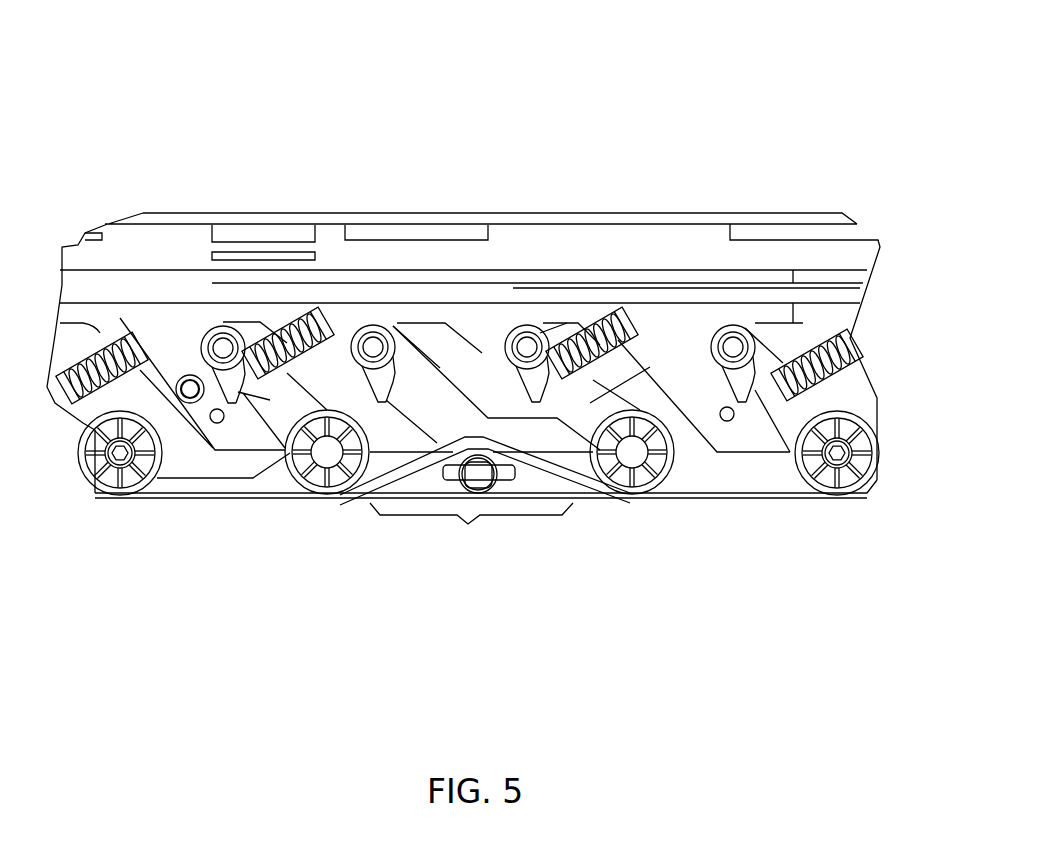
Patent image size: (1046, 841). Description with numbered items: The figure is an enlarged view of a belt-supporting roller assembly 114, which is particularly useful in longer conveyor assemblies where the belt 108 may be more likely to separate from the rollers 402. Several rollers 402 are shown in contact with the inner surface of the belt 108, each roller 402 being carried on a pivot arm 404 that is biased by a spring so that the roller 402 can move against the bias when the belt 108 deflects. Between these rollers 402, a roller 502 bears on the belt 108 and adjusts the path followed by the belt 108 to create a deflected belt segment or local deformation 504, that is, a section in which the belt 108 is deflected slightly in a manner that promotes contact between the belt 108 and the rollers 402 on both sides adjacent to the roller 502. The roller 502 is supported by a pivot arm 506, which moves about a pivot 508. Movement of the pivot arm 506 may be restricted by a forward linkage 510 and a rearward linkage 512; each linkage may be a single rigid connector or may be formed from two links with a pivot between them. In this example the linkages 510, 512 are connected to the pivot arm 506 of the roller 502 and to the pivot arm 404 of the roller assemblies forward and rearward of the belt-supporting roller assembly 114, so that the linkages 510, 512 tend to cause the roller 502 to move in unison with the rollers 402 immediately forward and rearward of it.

The belt-supporting roller assembly 114 is at (167, 118).
The belt 108 is at (237, 500).
The roller 402 is at (135, 495).
The pivot arm 404 is at (120, 318).
The pivot 508 is at (373, 347).
The rearward linkage 512 is at (387, 437).
The pivot arm 506 is at (422, 405).
The roller 502 is at (478, 472).
The forward linkage 510 is at (548, 437).
The local deformation 504 is at (470, 533).